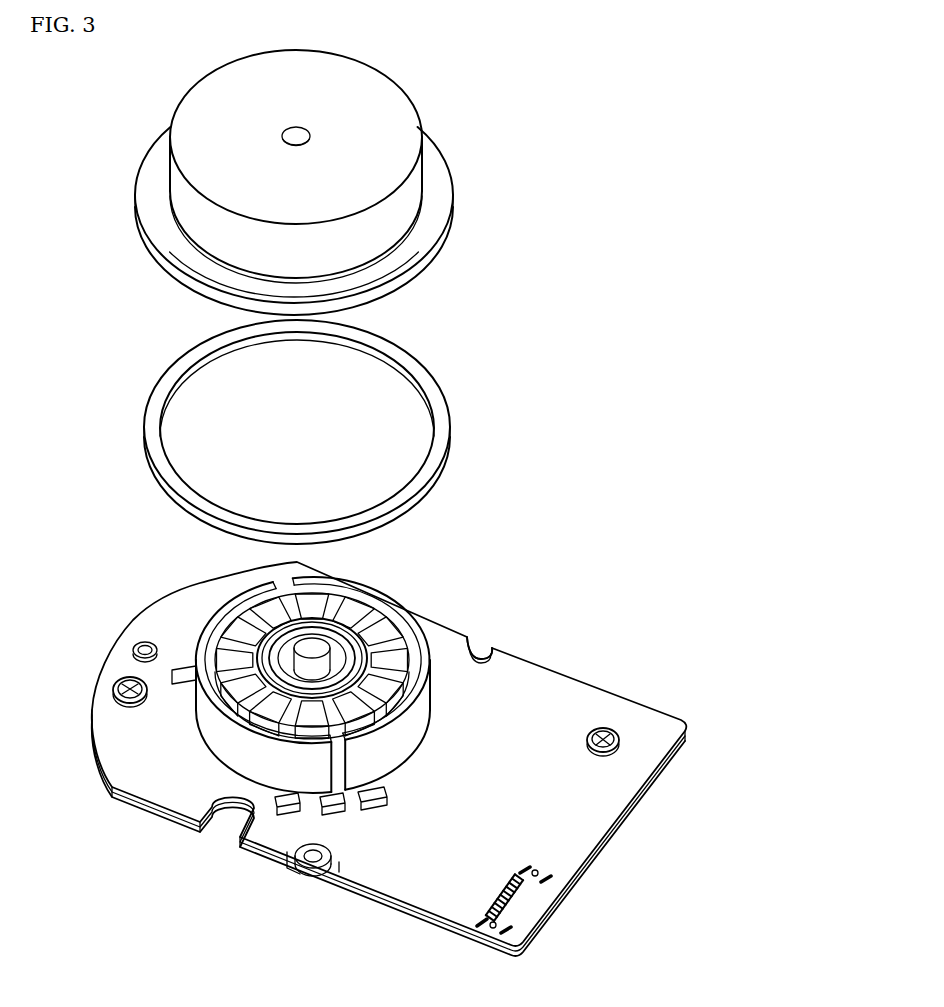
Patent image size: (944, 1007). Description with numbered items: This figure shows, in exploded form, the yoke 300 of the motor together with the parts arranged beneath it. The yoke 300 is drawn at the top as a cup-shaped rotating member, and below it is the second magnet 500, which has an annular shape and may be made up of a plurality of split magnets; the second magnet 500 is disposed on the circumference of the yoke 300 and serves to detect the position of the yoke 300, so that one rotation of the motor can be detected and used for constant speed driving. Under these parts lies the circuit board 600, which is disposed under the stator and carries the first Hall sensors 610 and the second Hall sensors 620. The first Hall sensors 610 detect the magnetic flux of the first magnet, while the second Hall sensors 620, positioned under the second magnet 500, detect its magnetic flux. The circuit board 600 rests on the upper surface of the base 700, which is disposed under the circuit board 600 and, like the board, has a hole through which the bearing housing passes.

The yoke 300 is at (475, 162).
The second magnet 500 is at (475, 418).
The circuit board 600 is at (562, 678).
The first Hall sensors 610 is at (378, 806).
The second Hall sensors 620 is at (182, 667).
The base 700 is at (488, 630).